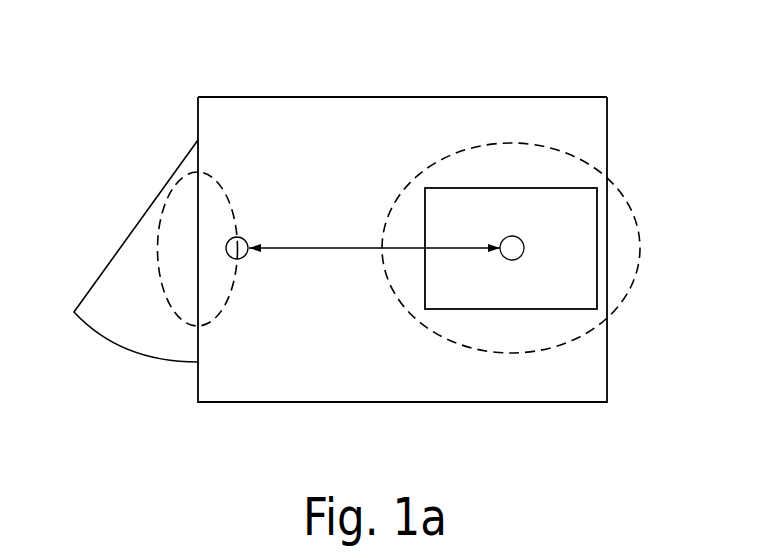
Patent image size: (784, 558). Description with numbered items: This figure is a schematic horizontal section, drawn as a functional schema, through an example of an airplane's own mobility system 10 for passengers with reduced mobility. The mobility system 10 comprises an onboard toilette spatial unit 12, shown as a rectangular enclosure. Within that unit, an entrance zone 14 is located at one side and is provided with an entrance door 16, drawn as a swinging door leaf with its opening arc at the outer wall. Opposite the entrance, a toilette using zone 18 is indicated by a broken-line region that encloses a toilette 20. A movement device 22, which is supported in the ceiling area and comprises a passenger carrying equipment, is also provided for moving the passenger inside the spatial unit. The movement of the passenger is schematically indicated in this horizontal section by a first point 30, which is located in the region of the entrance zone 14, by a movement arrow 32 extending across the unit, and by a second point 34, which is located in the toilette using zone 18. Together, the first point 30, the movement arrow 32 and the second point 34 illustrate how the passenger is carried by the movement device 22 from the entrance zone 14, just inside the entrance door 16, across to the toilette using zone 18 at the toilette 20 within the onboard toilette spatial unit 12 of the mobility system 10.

The mobility system 10 is at (397, 86).
The onboard toilette spatial unit 12 is at (301, 88).
The entrance zone 14 is at (180, 183).
The entrance door 16 is at (142, 219).
The toilette using zone 18 is at (568, 152).
The toilette 20 is at (568, 309).
The movement device 22 is at (264, 294).
The first point 30 is at (226, 248).
The movement arrow 32 is at (335, 249).
The second point 34 is at (524, 246).